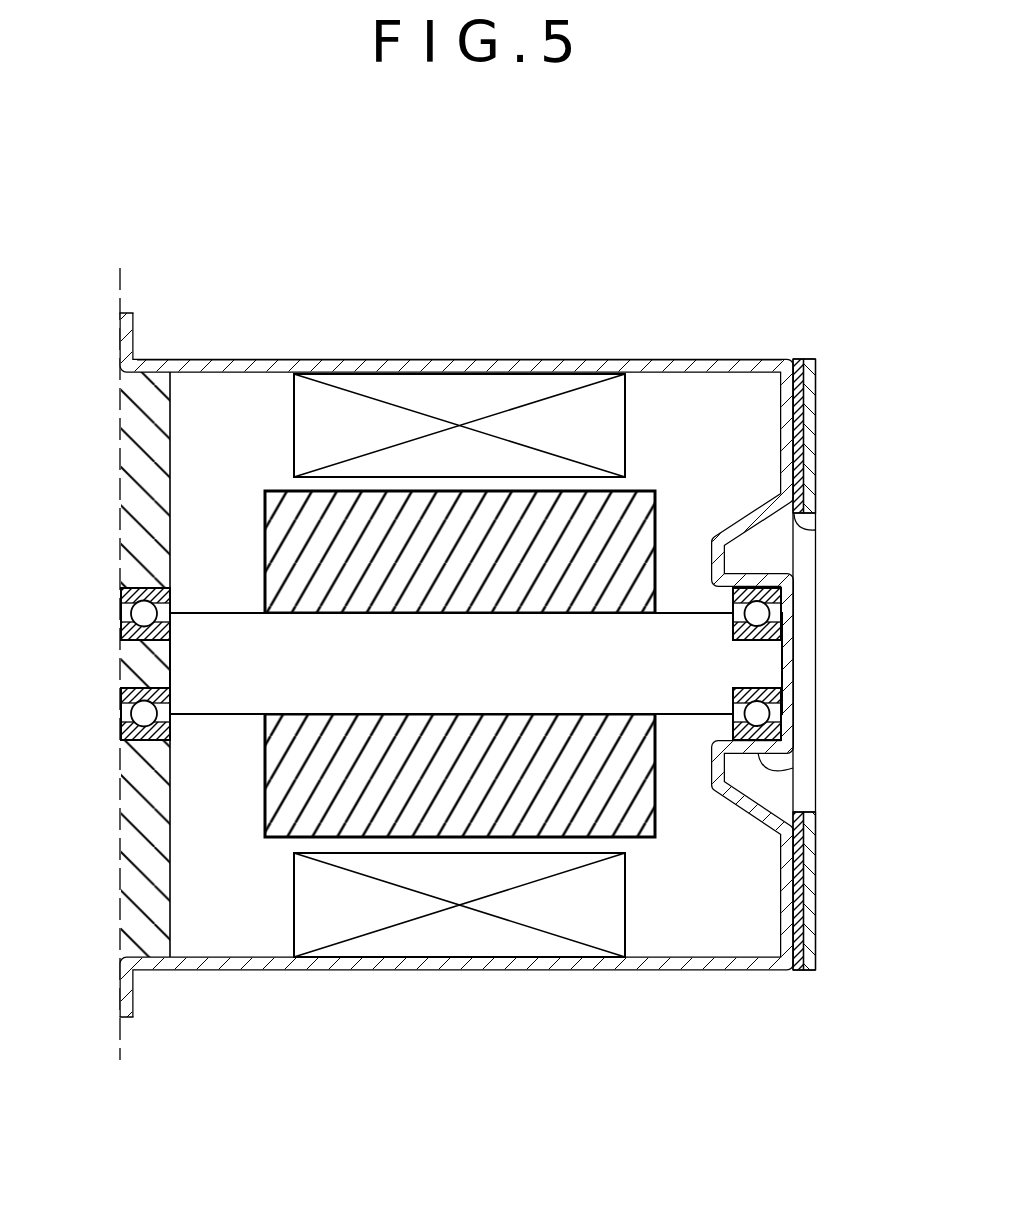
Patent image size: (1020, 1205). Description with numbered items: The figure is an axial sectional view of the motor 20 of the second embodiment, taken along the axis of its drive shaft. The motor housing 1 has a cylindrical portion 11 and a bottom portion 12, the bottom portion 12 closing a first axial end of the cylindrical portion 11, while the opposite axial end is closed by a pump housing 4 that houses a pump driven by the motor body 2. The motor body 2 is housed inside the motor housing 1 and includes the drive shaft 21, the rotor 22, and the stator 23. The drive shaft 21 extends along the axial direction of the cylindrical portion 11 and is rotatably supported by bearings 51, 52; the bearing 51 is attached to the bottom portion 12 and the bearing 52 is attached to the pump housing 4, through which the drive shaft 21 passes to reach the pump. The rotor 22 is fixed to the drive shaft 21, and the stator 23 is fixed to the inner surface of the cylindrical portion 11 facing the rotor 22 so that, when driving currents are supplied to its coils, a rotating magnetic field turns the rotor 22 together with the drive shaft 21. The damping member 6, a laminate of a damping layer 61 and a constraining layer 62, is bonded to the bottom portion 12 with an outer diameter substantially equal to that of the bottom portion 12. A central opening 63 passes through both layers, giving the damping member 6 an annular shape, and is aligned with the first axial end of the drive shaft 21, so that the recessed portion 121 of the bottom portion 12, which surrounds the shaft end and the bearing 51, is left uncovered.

The motor housing 1 is at (470, 358).
The cylindrical portion 11 is at (378, 358).
The bottom portion 12 is at (793, 895).
The motor body 2 is at (476, 649).
The motor 20 is at (653, 283).
The drive shaft 21 is at (222, 694).
The rotor 22 is at (418, 813).
The stator 23 is at (480, 930).
The pump housing 4 is at (125, 812).
The bearing 51 is at (782, 597).
The bearing 52 is at (121, 597).
The damping member 6 is at (822, 828).
The damping layer 61 is at (797, 358).
The constraining layer 62 is at (809, 358).
The opening 63 is at (813, 530).
The recessed portion 121 is at (796, 766).